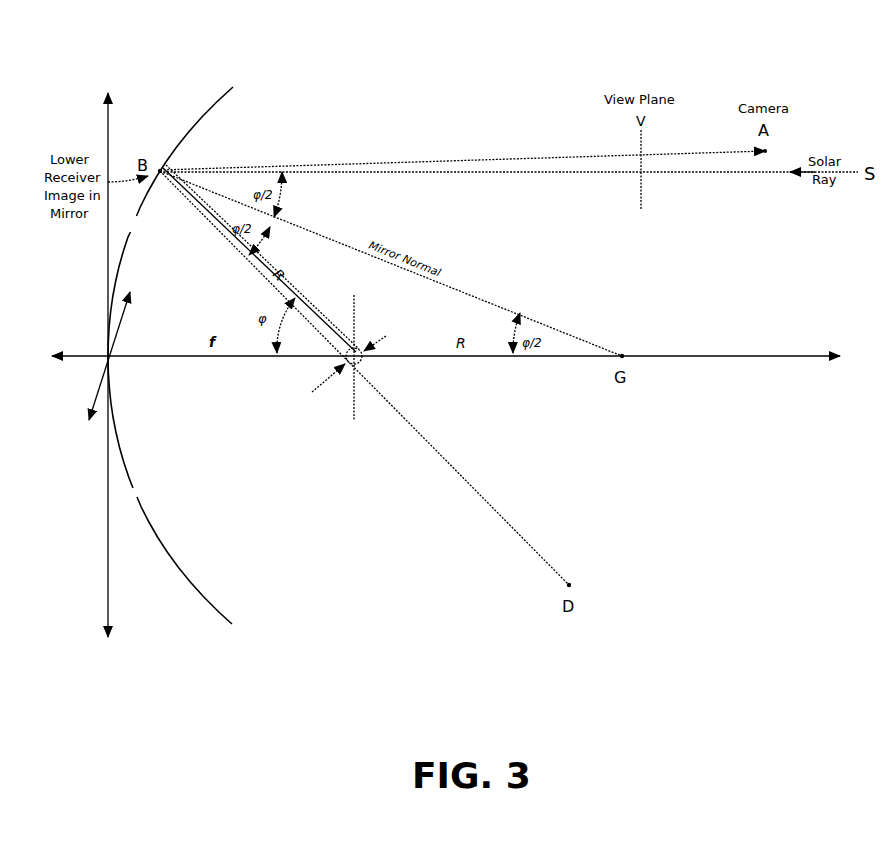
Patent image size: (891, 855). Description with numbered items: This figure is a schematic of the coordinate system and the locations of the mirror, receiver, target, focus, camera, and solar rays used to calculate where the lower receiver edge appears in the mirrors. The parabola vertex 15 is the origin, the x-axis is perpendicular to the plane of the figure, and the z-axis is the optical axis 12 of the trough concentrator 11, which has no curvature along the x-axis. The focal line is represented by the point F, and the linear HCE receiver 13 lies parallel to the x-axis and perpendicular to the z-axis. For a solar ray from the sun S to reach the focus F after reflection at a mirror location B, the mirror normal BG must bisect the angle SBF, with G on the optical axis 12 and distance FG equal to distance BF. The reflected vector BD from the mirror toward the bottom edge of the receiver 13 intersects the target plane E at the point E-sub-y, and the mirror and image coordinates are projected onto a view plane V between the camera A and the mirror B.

The trough 11 is at (246, 72).
The optical axis 12 is at (175, 357).
The HCE receiver 13 is at (370, 365).
The parabola vertex 15 is at (120, 369).